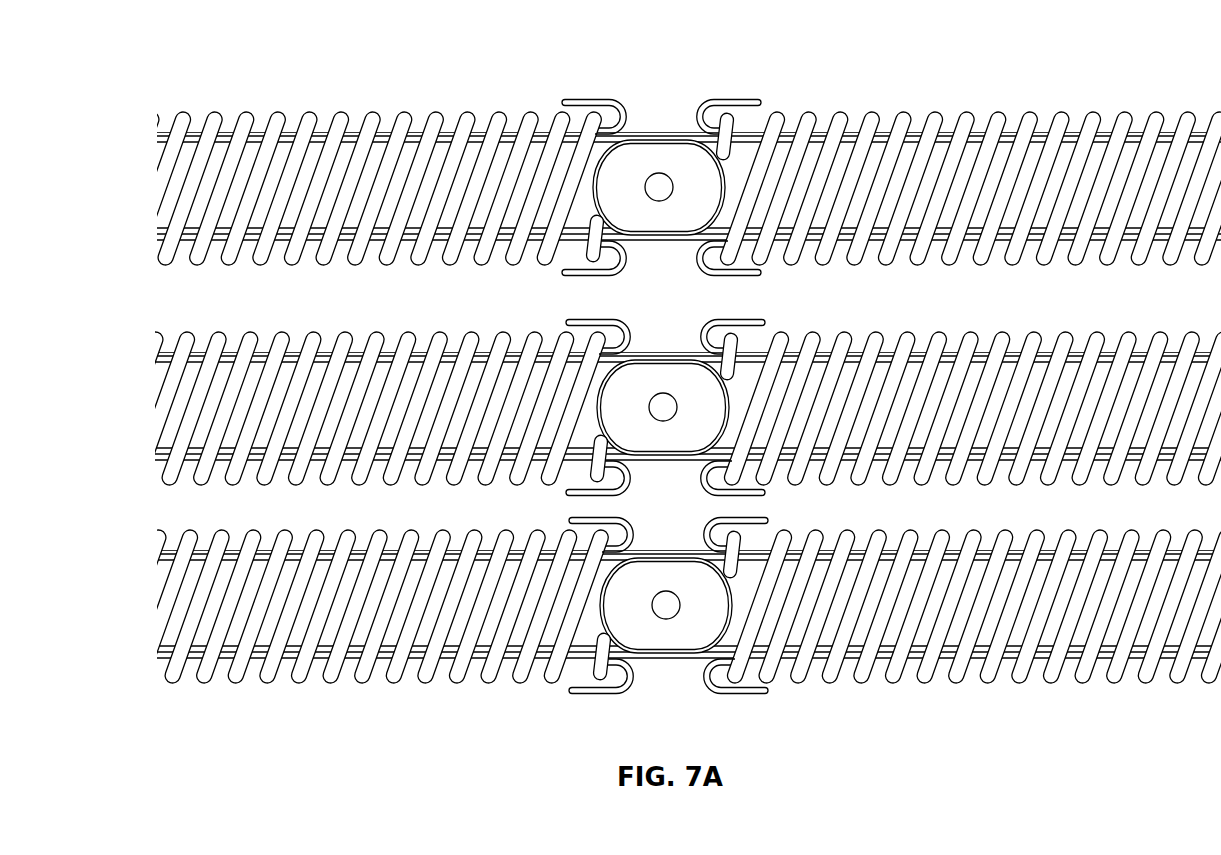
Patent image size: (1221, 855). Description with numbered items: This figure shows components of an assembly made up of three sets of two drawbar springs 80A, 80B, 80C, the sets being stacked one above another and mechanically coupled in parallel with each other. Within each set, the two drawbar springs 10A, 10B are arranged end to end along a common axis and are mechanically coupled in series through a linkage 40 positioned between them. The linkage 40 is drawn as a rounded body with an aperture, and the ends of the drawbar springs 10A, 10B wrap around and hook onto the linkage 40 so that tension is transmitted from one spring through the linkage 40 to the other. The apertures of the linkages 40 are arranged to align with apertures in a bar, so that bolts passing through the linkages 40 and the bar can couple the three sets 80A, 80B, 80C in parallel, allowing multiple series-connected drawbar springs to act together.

The set of two drawbar springs 80A is at (136, 113).
The set of two drawbar springs 80B is at (140, 363).
The set of two drawbar springs 80C is at (146, 562).
The first coil segment 10A is at (370, 95).
The second coil segment 10B is at (996, 101).
The linkage 40 is at (647, 224).